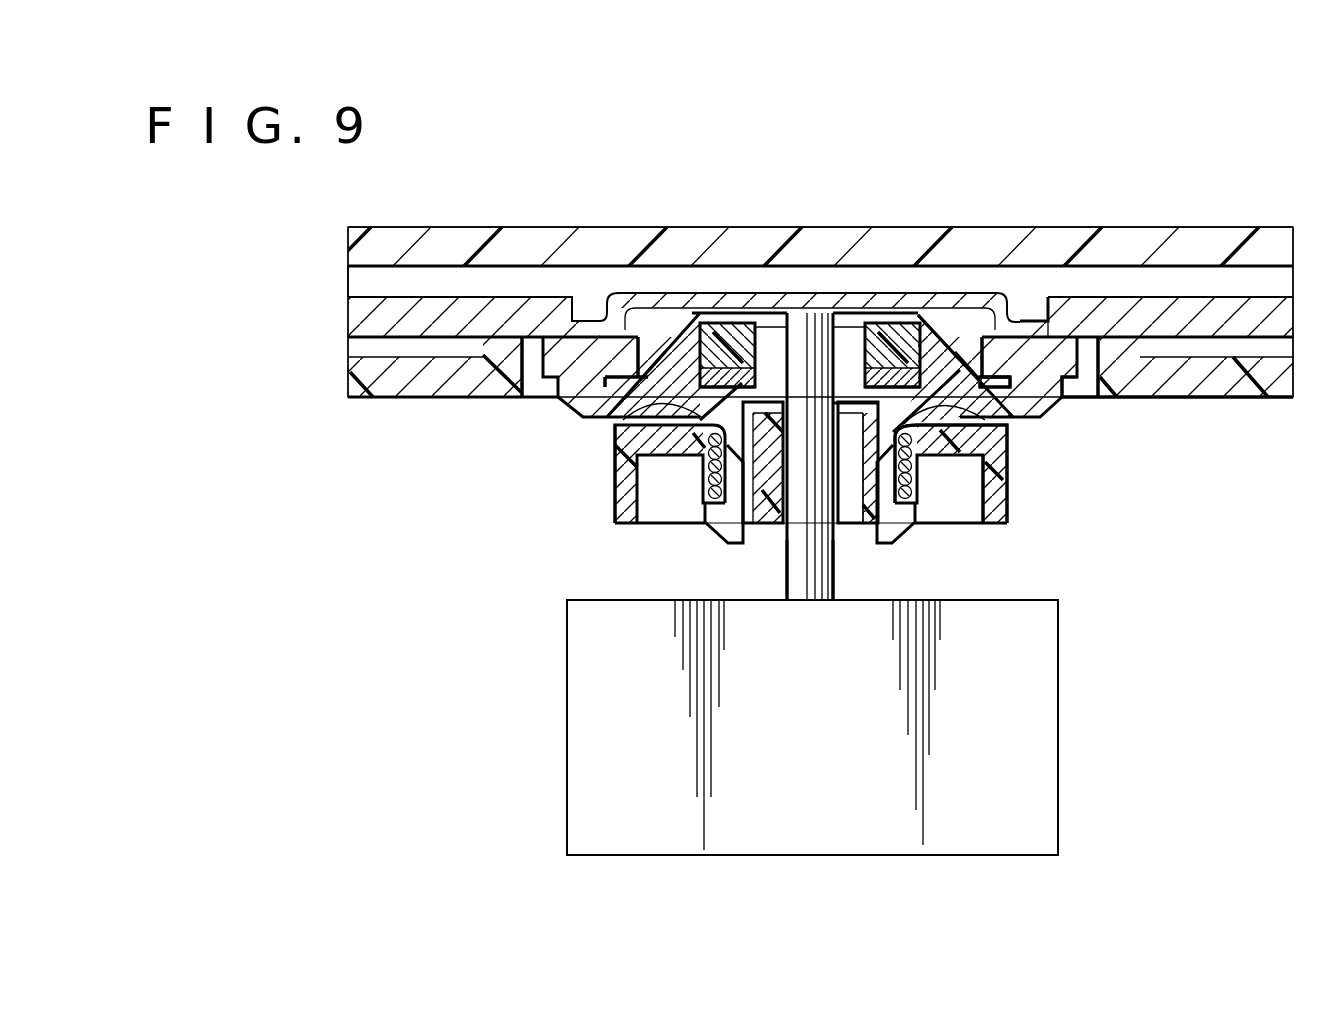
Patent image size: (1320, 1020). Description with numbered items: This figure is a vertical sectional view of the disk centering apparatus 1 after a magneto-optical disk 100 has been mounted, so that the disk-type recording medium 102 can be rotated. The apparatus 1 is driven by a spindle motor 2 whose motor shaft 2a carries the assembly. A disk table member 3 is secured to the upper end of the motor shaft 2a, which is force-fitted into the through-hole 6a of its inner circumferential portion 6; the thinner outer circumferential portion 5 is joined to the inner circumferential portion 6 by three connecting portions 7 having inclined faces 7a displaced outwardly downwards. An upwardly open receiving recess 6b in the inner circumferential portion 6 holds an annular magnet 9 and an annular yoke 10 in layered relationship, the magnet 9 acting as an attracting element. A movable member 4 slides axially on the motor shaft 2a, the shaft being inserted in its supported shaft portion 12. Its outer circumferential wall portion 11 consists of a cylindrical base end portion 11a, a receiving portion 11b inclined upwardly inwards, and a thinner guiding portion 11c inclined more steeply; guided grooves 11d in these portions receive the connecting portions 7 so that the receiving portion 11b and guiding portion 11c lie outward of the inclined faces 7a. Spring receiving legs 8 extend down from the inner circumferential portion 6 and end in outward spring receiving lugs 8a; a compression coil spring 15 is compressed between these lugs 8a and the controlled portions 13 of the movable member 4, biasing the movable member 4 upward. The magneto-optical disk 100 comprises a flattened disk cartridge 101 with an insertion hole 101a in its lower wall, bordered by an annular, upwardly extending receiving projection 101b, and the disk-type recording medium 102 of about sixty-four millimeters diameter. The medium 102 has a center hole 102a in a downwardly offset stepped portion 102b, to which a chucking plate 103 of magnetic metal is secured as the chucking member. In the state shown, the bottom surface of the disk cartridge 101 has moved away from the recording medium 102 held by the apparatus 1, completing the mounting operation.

The magneto-optical disk 100 is at (1208, 178).
The disk cartridge 101 is at (1178, 243).
The insertion hole 101a is at (532, 398).
The receiving projection 101b is at (500, 343).
The disk-type recording medium 102 is at (1243, 303).
The center hole 102a is at (1010, 335).
The stepped portion 102b is at (1053, 403).
The chucking plate 103 is at (868, 292).
The disk centering apparatus 1 is at (1100, 493).
The spindle motor 2 is at (567, 653).
The motor shaft 2a is at (825, 585).
The disk table member 3 is at (548, 400).
The movable member 4 is at (612, 492).
The outer circumferential portion 5 is at (1107, 380).
The inner circumferential portion 6 is at (812, 330).
The through-hole 6a is at (793, 387).
The receiving recess 6b is at (728, 323).
The connecting portions 7 is at (600, 335).
The inclined faces 7a is at (628, 335).
The spring receiving legs 8 is at (728, 527).
The spring receiving lugs 8a is at (697, 500).
The magnet 9 is at (735, 330).
The yoke 10 is at (768, 360).
The outer circumferential wall portion 11 is at (1007, 516).
The base end portion 11a is at (1007, 485).
The receiving portion 11b is at (1008, 400).
The guiding portion 11c is at (948, 340).
The guided grooves 11d is at (668, 345).
The supported shaft portion 12 is at (840, 508).
The controlled portions 13 is at (622, 408).
The compression coil spring 15 is at (708, 468).